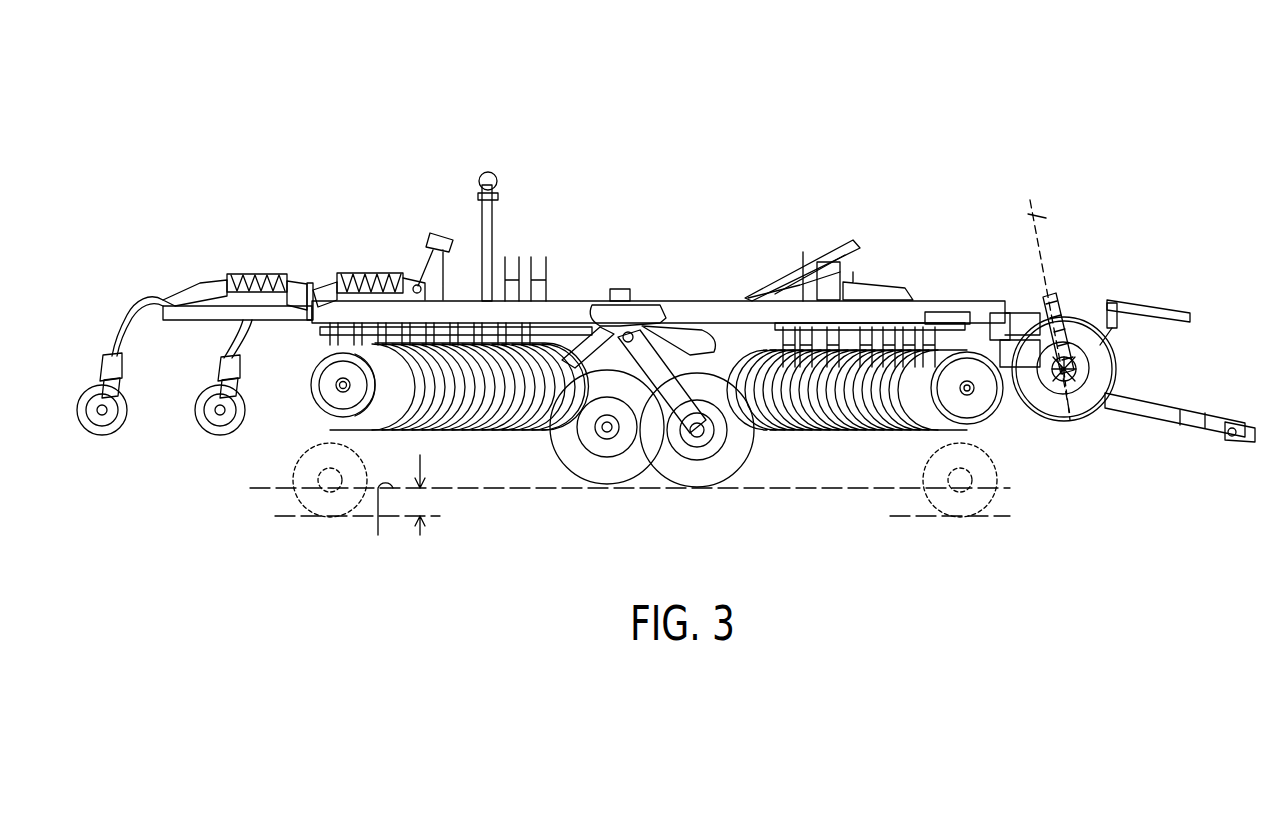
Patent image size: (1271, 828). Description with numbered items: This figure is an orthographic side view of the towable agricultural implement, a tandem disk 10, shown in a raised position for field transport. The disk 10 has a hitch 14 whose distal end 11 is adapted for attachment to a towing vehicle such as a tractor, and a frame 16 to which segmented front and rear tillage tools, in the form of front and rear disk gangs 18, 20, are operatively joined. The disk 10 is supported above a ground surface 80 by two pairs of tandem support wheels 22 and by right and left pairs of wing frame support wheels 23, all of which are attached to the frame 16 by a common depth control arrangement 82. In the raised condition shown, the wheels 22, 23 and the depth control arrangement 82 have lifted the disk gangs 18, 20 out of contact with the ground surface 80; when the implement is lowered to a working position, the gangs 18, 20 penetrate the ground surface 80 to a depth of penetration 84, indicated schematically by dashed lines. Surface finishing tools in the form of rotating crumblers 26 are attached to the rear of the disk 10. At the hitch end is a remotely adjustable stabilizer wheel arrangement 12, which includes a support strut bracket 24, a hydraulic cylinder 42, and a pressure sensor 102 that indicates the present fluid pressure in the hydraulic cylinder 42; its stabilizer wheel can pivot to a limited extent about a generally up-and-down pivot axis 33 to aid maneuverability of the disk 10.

The tandem disk 10 is at (537, 154).
The distal end 11 is at (1245, 445).
The remotely adjustable stabilizer wheel arrangement 12 is at (1055, 424).
The hitch 14 is at (1143, 405).
The frame 16 is at (665, 303).
The front disk gang 18 is at (845, 425).
The rear disk gang 20 is at (445, 432).
The tandem support wheel 22 is at (580, 445).
The wing frame support wheel 23 is at (735, 455).
The support strut bracket 24 is at (1003, 318).
The rotating crumbler 26 is at (95, 293).
The pivot axis 33 is at (1046, 217).
The hydraulic cylinder 42 is at (1100, 305).
The ground surface 80 is at (630, 522).
The depth control arrangement 82 is at (708, 347).
The depth of penetration 84 is at (422, 533).
The pressure sensor 102 is at (1063, 300).